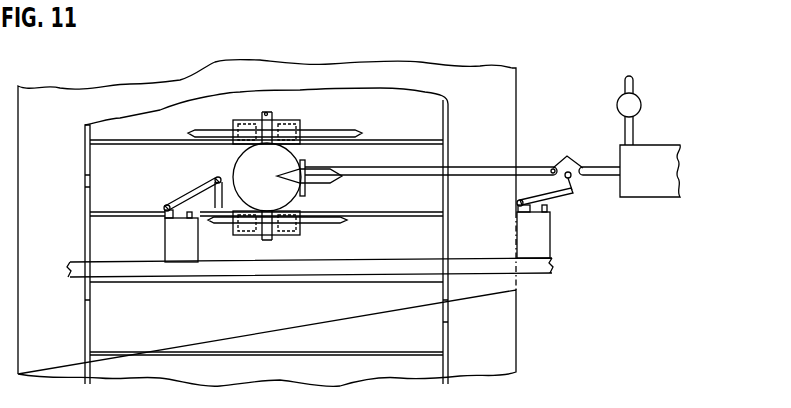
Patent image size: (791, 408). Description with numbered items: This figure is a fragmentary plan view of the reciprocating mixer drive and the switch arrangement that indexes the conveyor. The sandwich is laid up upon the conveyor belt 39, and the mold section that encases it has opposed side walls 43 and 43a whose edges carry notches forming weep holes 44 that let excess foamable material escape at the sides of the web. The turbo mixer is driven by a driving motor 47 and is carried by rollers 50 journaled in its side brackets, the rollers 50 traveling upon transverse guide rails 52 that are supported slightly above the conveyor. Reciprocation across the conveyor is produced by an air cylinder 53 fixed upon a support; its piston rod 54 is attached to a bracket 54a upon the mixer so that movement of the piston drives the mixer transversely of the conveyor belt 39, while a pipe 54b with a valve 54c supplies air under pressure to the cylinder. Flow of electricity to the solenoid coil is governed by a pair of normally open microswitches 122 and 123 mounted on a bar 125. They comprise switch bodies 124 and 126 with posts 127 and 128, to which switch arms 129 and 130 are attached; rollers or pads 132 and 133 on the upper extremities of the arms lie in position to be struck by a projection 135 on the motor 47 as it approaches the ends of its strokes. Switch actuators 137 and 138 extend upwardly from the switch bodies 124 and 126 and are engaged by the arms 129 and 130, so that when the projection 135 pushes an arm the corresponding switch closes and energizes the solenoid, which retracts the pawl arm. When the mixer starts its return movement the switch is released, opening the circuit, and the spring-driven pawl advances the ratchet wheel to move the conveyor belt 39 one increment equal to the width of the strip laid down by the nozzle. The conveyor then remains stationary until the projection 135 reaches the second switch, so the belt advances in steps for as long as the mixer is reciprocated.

The conveyor belt 39 is at (517, 316).
The side wall 43 is at (447, 359).
The side wall 43a is at (100, 283).
The weep holes 44 is at (90, 323).
The driving motor 47 is at (246, 160).
The rollers 50 is at (277, 114).
The transverse guide rails 52 is at (356, 214).
The air cylinder 53 is at (669, 145).
The piston rod 54 is at (556, 163).
The bracket 54a is at (304, 164).
The pipe 54b is at (625, 130).
The valve 54c is at (639, 98).
The microswitch 122 is at (156, 250).
The microswitch 123 is at (558, 243).
The switch body 124 is at (183, 254).
The bar 125 is at (485, 266).
The switch body 126 is at (534, 248).
The post 127 is at (164, 211).
The post 128 is at (517, 206).
The switch arm 129 is at (194, 194).
The switch arm 130 is at (538, 194).
The roller or pad 132 is at (215, 179).
The roller or pad 133 is at (577, 180).
The projection 135 is at (312, 180).
The switch actuator 137 is at (196, 220).
The switch actuator 138 is at (548, 210).